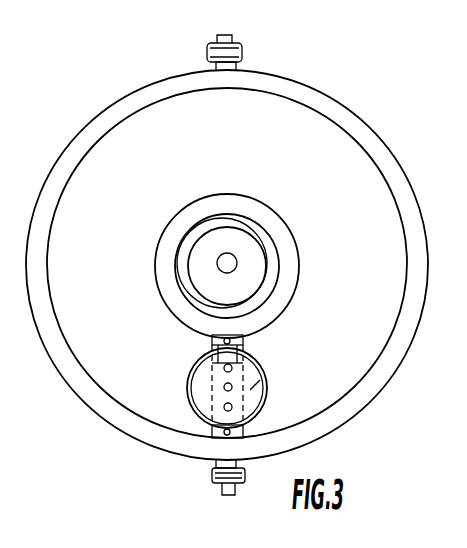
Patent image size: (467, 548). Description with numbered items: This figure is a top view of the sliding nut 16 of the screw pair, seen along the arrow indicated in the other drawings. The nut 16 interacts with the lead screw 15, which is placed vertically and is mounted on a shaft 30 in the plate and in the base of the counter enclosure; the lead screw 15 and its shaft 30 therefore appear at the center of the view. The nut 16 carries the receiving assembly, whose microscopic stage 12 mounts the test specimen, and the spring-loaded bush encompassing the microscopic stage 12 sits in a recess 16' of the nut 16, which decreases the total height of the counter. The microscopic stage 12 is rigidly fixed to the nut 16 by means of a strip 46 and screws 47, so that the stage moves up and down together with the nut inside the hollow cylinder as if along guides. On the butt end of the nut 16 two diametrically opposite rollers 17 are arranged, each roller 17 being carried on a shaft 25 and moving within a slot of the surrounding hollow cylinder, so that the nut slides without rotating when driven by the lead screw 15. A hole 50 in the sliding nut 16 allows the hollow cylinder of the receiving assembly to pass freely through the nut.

The microscopic stage 12 is at (265, 372).
The lead screw 15 is at (260, 232).
The nut 16 is at (229, 265).
The recess 16' is at (255, 263).
The rollers 17 is at (212, 472).
The shaft 25 is at (222, 490).
The shaft 30 is at (228, 274).
The strip 46 is at (242, 353).
The screws 47 is at (248, 427).
The hole 50 is at (203, 358).